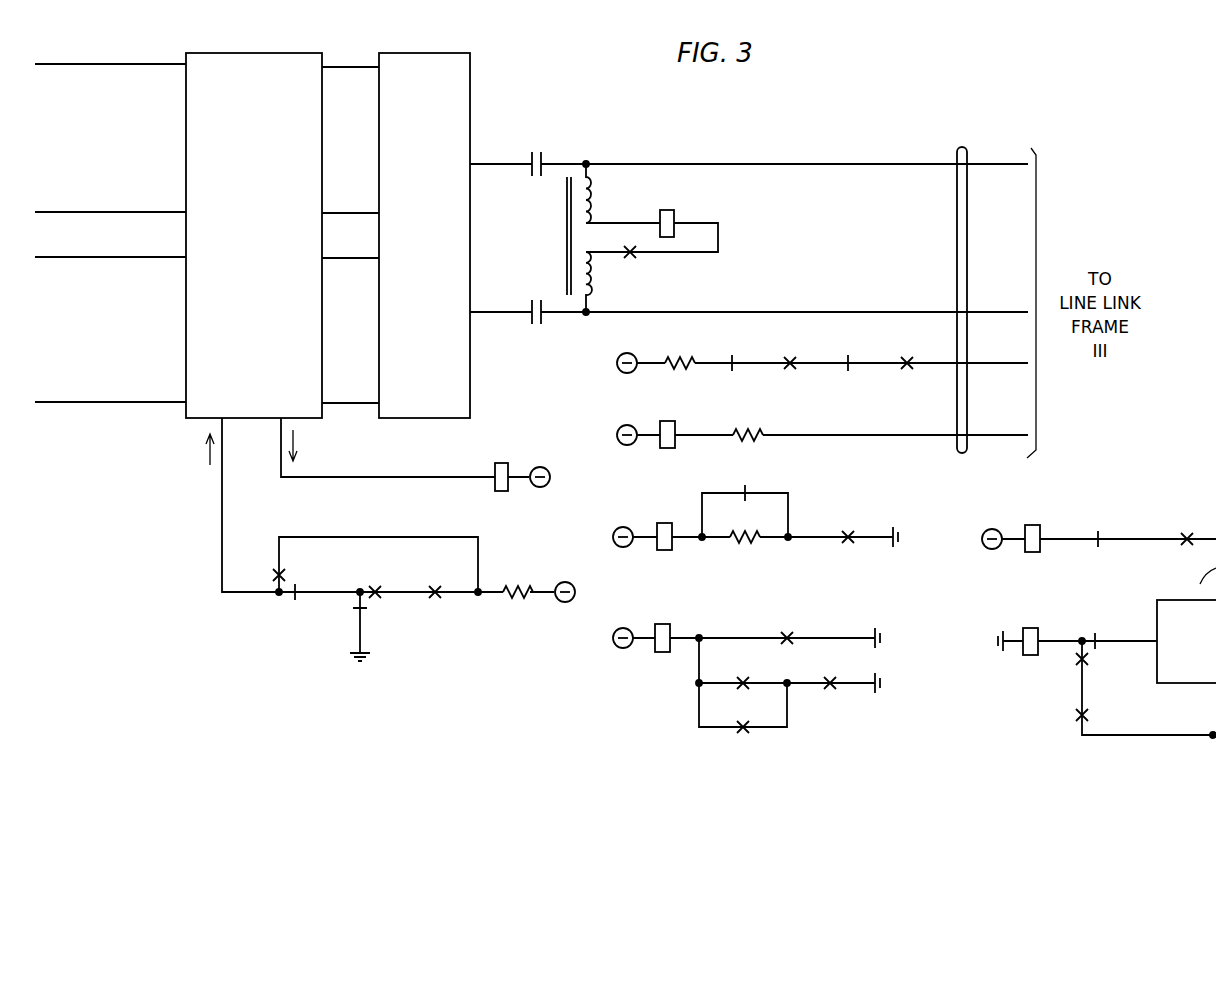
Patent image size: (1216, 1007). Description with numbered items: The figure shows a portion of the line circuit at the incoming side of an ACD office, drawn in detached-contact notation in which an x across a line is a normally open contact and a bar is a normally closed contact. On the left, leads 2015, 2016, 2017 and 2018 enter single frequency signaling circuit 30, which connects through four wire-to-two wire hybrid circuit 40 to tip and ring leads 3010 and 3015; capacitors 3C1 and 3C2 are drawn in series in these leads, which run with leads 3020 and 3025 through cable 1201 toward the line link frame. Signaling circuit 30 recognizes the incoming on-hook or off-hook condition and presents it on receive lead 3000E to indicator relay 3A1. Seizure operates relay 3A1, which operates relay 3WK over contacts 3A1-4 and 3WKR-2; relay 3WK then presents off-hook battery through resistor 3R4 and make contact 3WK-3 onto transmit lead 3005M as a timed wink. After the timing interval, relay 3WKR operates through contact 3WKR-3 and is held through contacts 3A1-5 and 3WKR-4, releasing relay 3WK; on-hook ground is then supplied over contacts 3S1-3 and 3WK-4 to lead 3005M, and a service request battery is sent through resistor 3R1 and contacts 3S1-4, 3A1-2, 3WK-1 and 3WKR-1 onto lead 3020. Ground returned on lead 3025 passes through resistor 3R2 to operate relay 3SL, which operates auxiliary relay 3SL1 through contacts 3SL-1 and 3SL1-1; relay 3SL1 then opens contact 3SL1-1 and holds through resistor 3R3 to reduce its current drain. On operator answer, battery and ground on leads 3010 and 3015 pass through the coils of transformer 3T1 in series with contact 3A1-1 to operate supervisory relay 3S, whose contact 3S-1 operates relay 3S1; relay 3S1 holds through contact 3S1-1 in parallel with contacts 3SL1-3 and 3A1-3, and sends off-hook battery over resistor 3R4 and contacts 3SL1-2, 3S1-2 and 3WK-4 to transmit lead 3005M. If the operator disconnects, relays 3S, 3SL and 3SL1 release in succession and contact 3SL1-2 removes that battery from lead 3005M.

The single frequency signaling circuit 30 is at (242, 53).
The four wire-to-two wire hybrid circuit 40 is at (401, 53).
The lead 2015 is at (110, 52).
The lead 2016 is at (110, 200).
The lead 2017 is at (110, 245).
The lead 2018 is at (110, 390).
The tip lead 3010 is at (497, 163).
The ring lead 3015 is at (500, 322).
The lead 3020 is at (822, 357).
The lead 3025 is at (822, 428).
The cable to line link frame 1201 is at (962, 146).
The capacitor 3C1 is at (539, 176).
The capacitor 3C2 is at (539, 302).
The transformer 3T1 is at (566, 228).
The supervisory relay 3S is at (667, 212).
The contact of relay 3A1 3A1-1 is at (632, 262).
The resistor 3R1 is at (680, 354).
The contact of relay 3S1 3S1-4 is at (729, 376).
The contact of relay 3A1 3A1-2 is at (791, 354).
The contact of relay 3WK 3WK-1 is at (850, 376).
The contact of relay 3WKR 3WKR-1 is at (908, 354).
The relay 3SL is at (666, 424).
The resistor 3R2 is at (750, 421).
The auxiliary relay 3SL1 is at (755, 526).
The contact of relay 3SL1 3SL1-1 is at (745, 501).
The resistor 3R3 is at (744, 551).
The contact of relay 3SL 3SL-1 is at (845, 528).
The relay 3S1 is at (746, 663).
The contact of relay 3S 3S-1 is at (783, 627).
The contact of relay 3SL1 3SL1-3 is at (743, 672).
The contact of relay 3S1 3S1-1 is at (831, 695).
The contact of relay 3A1 3A1-3 is at (743, 739).
The relay 3WK is at (1099, 529).
The contact of relay 3WKR 3WKR-2 is at (1103, 553).
The contact of relay 3A1 3A1-4 is at (1186, 529).
The relay 3WKR is at (1107, 653).
The contact of relay 3WKR 3WKR-3 is at (1108, 627).
The contact of relay 3WKR 3WKR-4 is at (1076, 664).
The contact of relay 3A1 3A1-5 is at (1076, 716).
The receive lead 3000E is at (357, 477).
The indicator relay 3A1 is at (516, 465).
The transmit lead 3005M is at (222, 506).
The make contact of relay 3WK 3WK-3 is at (285, 578).
The contact of relay 3WK 3WK-4 is at (295, 604).
The contact of relay 3S1 3S1-2 is at (378, 587).
The contact of relay 3S1 3S1-3 is at (368, 612).
The contact of relay 3SL1 3SL1-2 is at (437, 603).
The resistor 3R4 is at (536, 585).